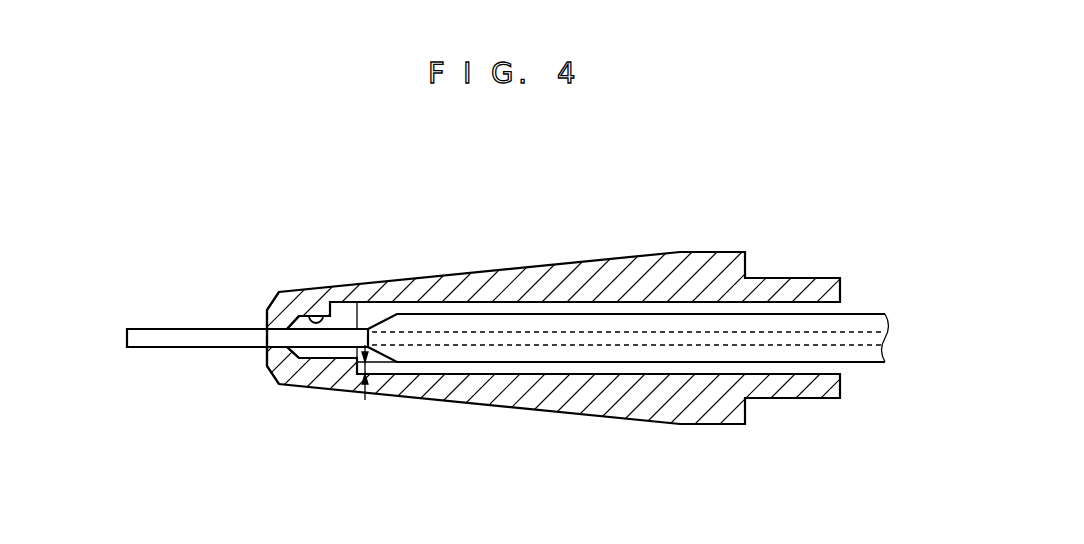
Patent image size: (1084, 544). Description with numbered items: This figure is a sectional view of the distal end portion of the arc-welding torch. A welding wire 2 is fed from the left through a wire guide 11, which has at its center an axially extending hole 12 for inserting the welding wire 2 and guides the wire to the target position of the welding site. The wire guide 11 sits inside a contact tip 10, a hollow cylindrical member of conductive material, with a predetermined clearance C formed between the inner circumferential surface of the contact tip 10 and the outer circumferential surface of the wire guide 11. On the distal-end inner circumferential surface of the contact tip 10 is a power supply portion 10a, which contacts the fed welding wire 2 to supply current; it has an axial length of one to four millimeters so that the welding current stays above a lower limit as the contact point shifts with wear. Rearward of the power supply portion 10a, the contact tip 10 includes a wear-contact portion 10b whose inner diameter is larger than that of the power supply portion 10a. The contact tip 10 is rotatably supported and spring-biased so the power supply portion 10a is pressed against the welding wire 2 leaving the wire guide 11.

The welding wire 2 is at (182, 329).
The contact tip 10 is at (613, 291).
The power supply portion 10a is at (268, 328).
The wear-contact portion 10b is at (317, 316).
The wire guide 11 is at (504, 314).
The hole 12 is at (694, 336).
The clearance C is at (366, 368).